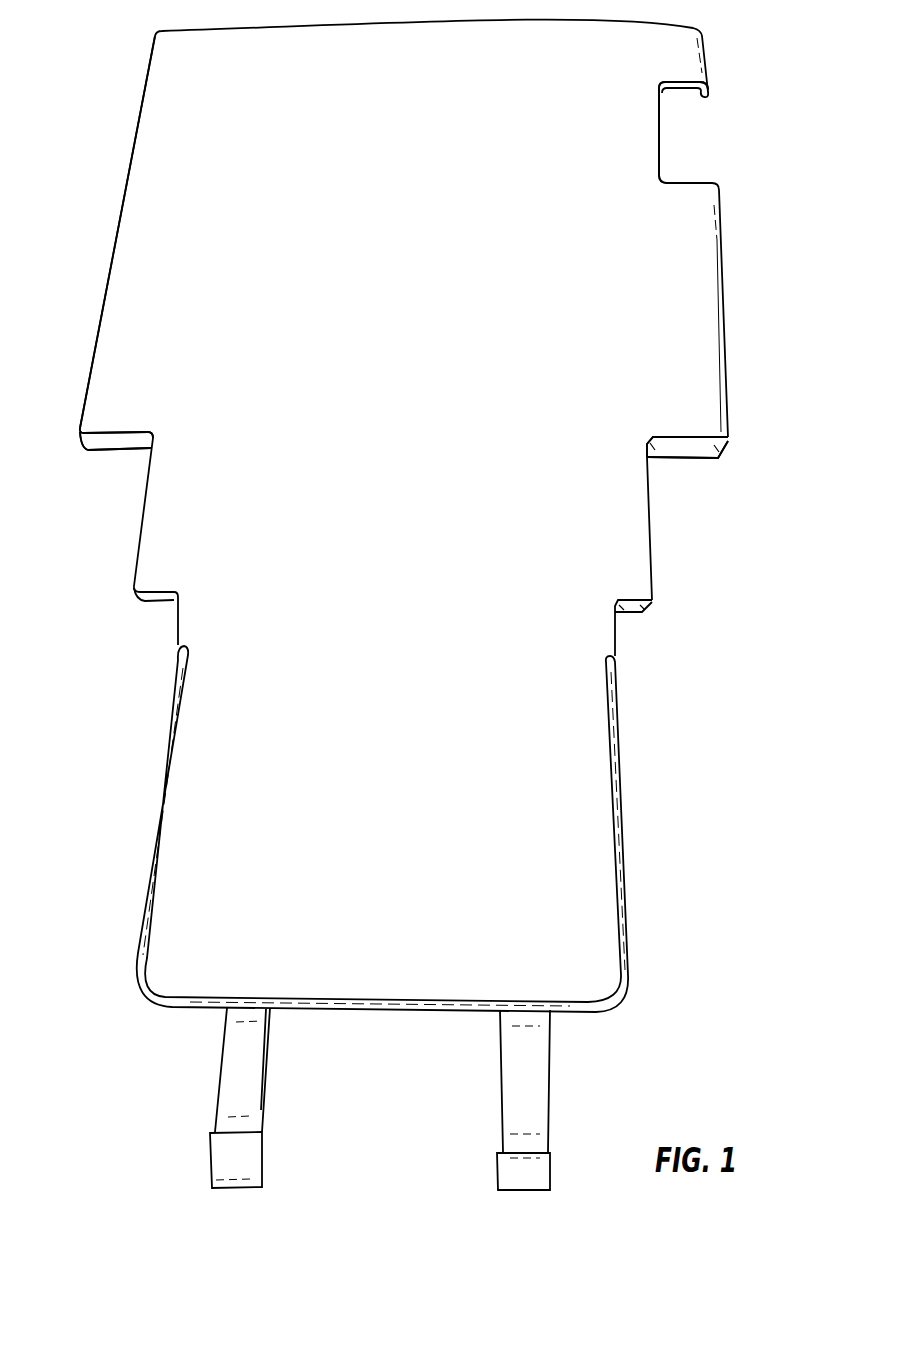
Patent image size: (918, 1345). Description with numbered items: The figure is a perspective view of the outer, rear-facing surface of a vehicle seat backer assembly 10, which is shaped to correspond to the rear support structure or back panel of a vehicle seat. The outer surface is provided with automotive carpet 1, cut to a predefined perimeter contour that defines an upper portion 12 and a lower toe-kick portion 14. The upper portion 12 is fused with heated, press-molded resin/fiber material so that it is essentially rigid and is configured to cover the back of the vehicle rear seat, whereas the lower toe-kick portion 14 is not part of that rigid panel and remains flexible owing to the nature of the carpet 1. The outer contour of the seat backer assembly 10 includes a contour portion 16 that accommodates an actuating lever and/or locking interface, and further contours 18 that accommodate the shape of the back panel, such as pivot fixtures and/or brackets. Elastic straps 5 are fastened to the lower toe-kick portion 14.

The carpet 1 is at (197, 90).
The elastic straps 5 is at (495, 1083).
The vehicle seat backer assembly 10 is at (768, 217).
The upper portion 12 is at (168, 232).
The lower toe-kick portion 14 is at (587, 777).
The contour portion 16 is at (680, 92).
The further contours 18 is at (153, 537).